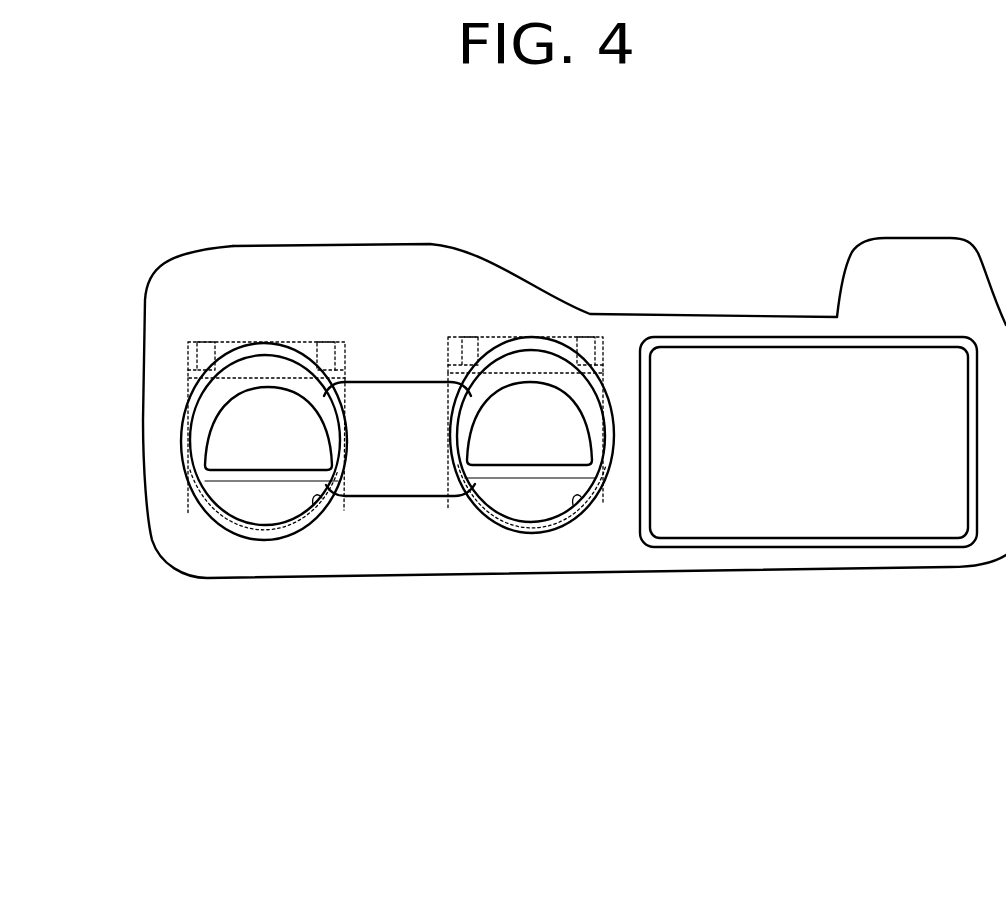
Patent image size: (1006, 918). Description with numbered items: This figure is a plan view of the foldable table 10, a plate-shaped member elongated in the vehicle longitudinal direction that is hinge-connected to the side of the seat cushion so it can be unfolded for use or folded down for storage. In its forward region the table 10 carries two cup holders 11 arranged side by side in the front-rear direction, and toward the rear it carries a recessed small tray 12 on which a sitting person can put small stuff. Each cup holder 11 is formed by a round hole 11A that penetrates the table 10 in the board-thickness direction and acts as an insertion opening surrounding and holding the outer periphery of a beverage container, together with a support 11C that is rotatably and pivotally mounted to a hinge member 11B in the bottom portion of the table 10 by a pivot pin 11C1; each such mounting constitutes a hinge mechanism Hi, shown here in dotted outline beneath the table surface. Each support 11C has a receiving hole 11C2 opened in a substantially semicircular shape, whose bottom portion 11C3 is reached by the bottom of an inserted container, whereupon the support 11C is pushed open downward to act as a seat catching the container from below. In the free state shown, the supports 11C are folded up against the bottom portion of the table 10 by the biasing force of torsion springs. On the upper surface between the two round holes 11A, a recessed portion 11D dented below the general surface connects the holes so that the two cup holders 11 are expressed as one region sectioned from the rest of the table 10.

The table 10 is at (895, 158).
The cup holder 11 is at (390, 513).
The round hole 11A is at (312, 508).
The hinge member 11B is at (397, 433).
The support 11C is at (377, 520).
The pivot pin 11C1 is at (207, 342).
The receiving hole 11C2 is at (263, 433).
The bottom portion 11C3 is at (394, 580).
The recessed portion 11D is at (393, 457).
The small tray 12 is at (815, 487).
The hinge mechanism Hi is at (423, 365).